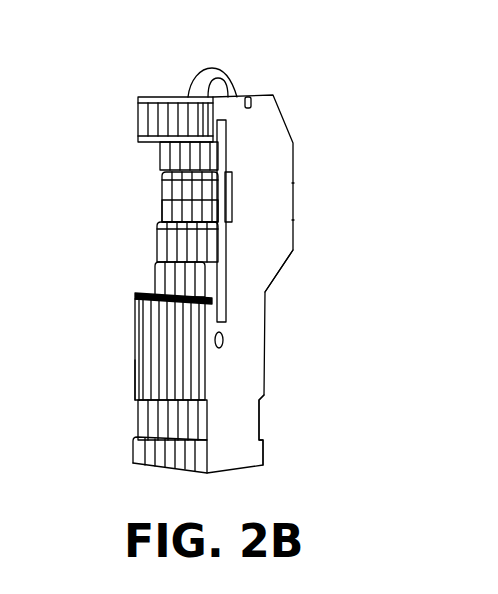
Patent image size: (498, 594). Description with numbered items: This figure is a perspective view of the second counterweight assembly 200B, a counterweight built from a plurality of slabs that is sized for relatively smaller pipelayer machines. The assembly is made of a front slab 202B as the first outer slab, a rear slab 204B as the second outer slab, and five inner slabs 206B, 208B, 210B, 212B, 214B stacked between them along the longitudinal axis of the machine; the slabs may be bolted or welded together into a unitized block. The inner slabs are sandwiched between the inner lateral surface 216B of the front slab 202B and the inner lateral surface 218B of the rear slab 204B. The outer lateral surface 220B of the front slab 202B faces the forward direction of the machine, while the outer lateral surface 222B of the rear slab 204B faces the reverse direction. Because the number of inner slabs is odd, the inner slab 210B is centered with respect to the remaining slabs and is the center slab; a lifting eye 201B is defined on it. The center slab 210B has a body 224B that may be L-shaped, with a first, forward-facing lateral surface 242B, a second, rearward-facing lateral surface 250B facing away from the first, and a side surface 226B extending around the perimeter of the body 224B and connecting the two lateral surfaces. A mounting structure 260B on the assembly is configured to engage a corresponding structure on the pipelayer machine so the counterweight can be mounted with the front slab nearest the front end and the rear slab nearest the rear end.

The second counterweight assembly 200B is at (210, 241).
The lifting eye 201B is at (207, 71).
The front slab 202B is at (203, 125).
The rear slab 204B is at (140, 114).
The inner slab 206B is at (215, 162).
The inner slab 208B is at (208, 188).
The center slab 210B is at (200, 208).
The inner slab 212B is at (184, 240).
The inner slab 214B is at (162, 272).
The inner lateral surface of the front slab 216B is at (202, 308).
The inner lateral surface of the rear slab 218B is at (136, 339).
The outer lateral surface of the front slab 220B is at (275, 133).
The outer lateral surface of the rear slab 222B is at (118, 384).
The body of the center slab 224B is at (300, 252).
The side surface 226B is at (118, 450).
The first lateral surface 242B is at (180, 417).
The second lateral surface 250B is at (143, 423).
The mounting structure 260B is at (232, 120).